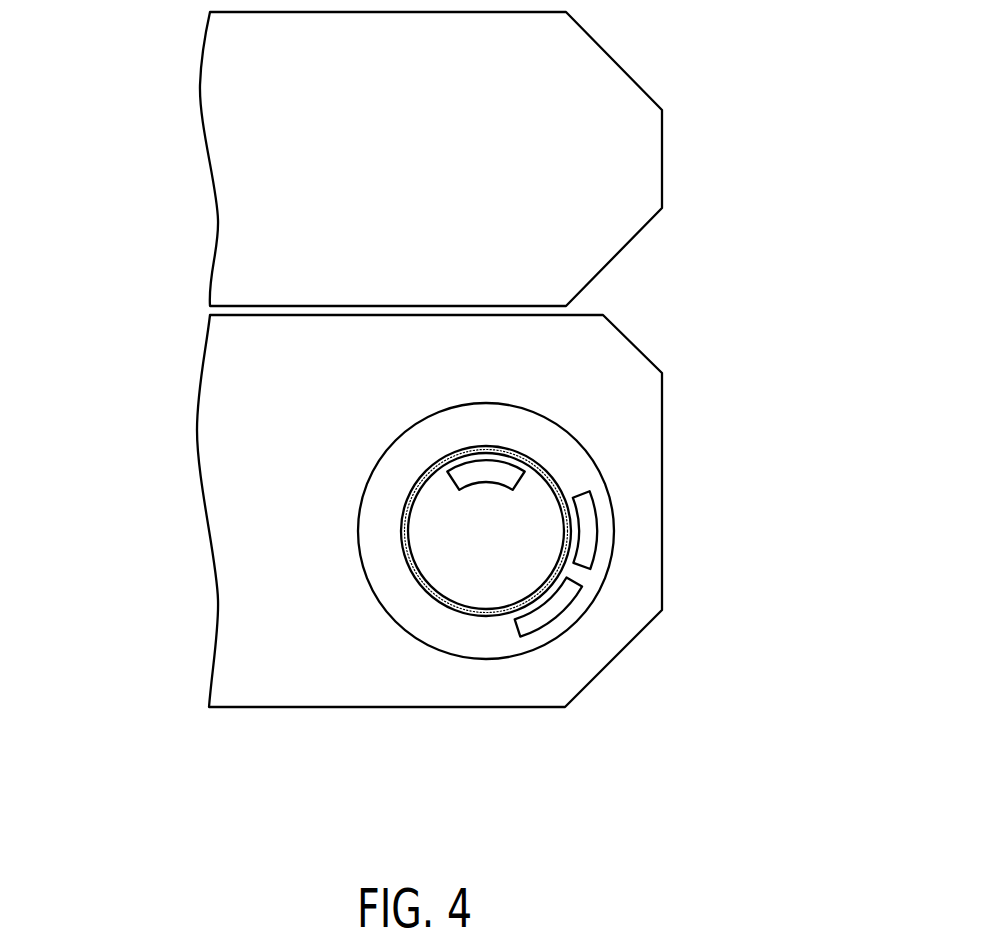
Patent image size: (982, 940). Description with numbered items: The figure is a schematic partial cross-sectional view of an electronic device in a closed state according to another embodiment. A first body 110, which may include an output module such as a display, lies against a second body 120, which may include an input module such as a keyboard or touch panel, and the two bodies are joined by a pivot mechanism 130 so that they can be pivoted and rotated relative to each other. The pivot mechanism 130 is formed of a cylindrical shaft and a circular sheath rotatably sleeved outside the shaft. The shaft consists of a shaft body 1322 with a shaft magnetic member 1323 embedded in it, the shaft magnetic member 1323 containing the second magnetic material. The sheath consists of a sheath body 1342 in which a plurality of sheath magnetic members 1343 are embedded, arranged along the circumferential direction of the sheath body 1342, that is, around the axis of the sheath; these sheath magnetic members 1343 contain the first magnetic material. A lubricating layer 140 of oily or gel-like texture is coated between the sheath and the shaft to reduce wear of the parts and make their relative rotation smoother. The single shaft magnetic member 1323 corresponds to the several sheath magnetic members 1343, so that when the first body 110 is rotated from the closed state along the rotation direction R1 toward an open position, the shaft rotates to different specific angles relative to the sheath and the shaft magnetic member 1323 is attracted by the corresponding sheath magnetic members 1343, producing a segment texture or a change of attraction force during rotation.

The first body 110 is at (576, 48).
The second body 120 is at (324, 675).
The pivot mechanism 130 is at (696, 635).
The shaft body 1322 is at (460, 572).
The shaft magnetic member 1323 is at (466, 472).
The sheath body 1342 is at (575, 467).
The sheath magnetic member 1343 is at (587, 507).
The lubricating layer 140 is at (405, 542).
The rotation direction R1 is at (715, 74).